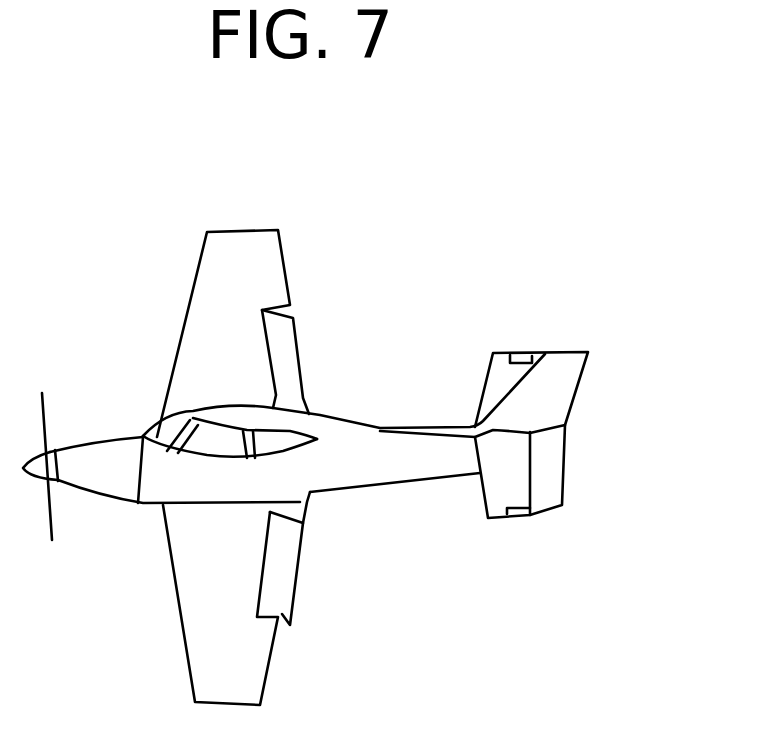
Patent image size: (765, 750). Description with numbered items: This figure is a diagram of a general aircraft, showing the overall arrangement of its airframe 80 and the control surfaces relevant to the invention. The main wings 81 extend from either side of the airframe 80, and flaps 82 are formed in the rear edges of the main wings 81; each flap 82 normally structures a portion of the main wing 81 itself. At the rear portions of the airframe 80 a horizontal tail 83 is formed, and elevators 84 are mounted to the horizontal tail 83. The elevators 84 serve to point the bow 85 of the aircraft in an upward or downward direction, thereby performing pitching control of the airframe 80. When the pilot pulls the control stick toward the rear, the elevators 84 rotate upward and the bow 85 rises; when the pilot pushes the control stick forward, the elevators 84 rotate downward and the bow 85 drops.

The airframe 80 is at (367, 313).
The main wings 81 is at (200, 250).
The flaps 82 is at (302, 373).
The horizontal tail 83 is at (502, 353).
The elevators 84 is at (565, 472).
The bow 85 is at (70, 446).